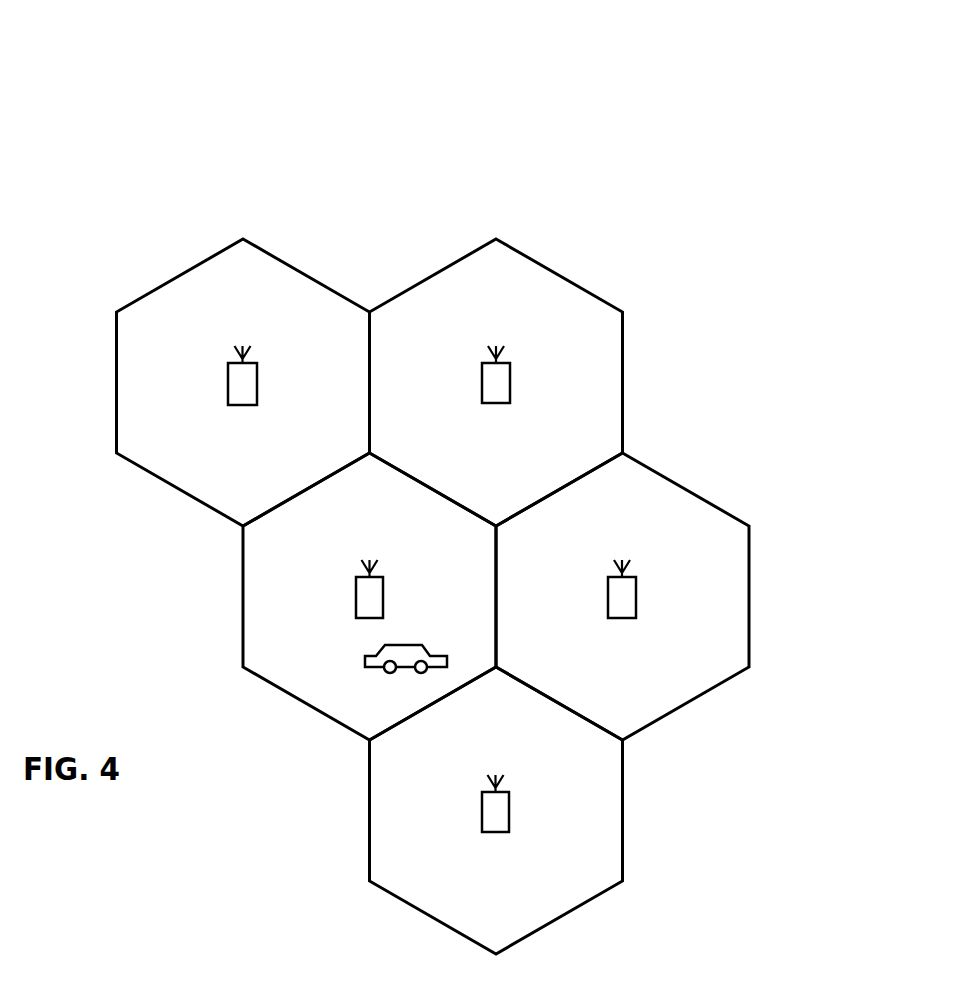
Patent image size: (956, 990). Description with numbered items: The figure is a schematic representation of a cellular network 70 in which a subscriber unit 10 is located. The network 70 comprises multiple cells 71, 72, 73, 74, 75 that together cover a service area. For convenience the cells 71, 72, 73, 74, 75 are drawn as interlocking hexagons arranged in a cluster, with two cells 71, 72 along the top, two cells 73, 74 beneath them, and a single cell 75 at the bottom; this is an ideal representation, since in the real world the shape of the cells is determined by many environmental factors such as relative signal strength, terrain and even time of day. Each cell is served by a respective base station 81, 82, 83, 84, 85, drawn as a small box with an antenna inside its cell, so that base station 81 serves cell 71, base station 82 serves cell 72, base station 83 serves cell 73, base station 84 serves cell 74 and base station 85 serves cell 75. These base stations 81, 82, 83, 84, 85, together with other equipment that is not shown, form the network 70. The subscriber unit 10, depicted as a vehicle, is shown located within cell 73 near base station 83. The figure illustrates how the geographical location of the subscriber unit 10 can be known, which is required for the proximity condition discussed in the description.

The cellular network 70 is at (770, 83).
The cell 71 is at (116, 420).
The cell 72 is at (622, 340).
The cell 73 is at (260, 625).
The cell 74 is at (732, 543).
The cell 75 is at (612, 782).
The base station 81 is at (228, 398).
The base station 82 is at (483, 397).
The base station 83 is at (358, 612).
The base station 84 is at (612, 610).
The base station 85 is at (485, 823).
The subscriber unit 10 is at (413, 650).